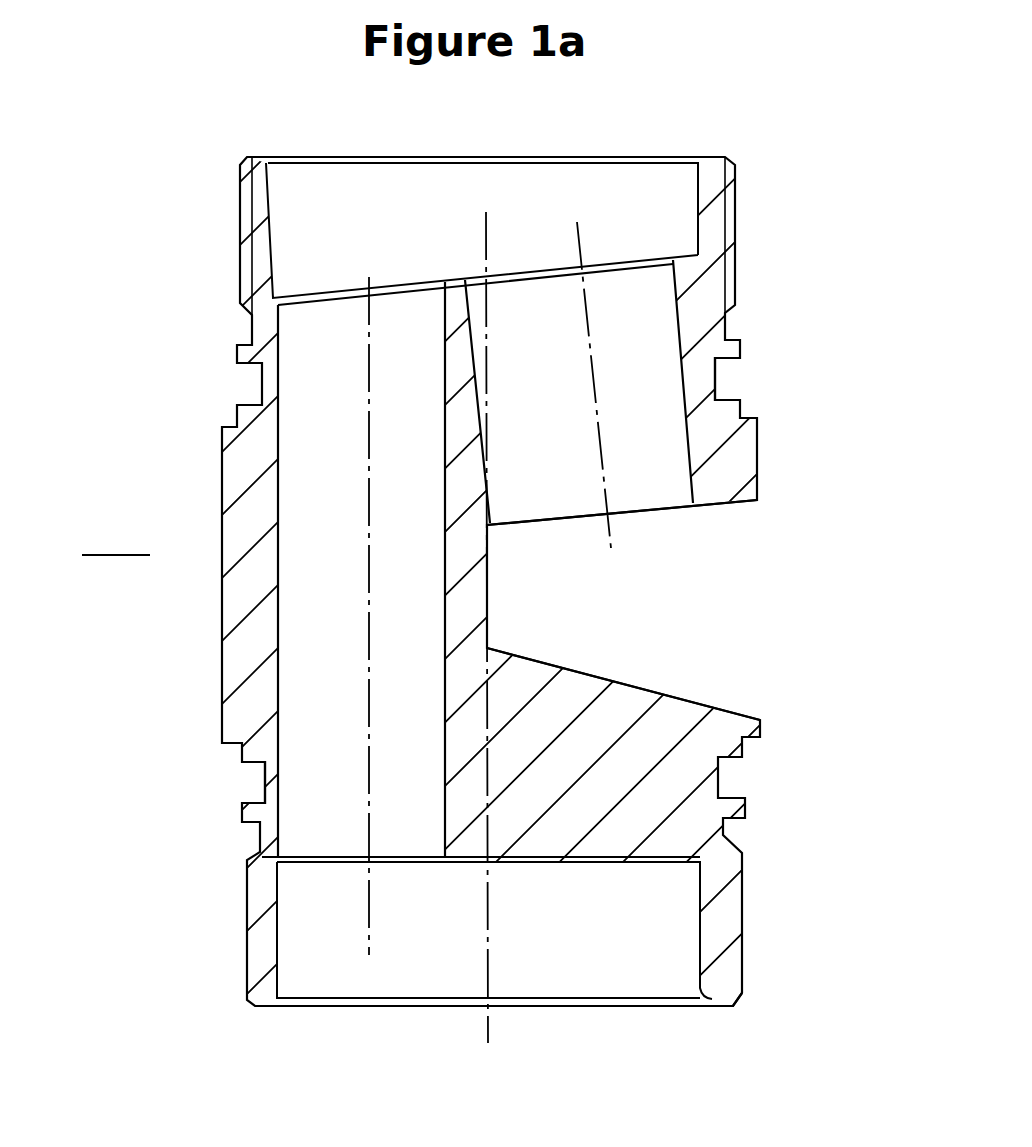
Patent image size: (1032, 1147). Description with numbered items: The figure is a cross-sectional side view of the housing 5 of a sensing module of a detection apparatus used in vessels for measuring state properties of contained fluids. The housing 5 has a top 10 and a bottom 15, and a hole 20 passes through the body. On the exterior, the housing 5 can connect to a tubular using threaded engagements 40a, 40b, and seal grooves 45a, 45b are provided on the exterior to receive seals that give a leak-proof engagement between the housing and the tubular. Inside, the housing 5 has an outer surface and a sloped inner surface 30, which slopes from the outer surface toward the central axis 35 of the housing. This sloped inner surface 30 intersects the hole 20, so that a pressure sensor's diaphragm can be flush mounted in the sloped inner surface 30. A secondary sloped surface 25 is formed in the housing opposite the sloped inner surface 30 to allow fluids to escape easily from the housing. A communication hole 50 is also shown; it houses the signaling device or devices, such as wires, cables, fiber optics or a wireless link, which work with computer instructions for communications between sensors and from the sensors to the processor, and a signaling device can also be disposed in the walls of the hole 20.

The housing 5 is at (140, 562).
The top 10 is at (290, 157).
The bottom 15 is at (712, 1003).
The hole 20 is at (618, 313).
The secondary sloped surface 25 is at (627, 683).
The sloped inner surface 30 is at (675, 508).
The central axis 35 is at (492, 943).
The threaded engagement 40a is at (238, 220).
The threaded engagement 40b is at (742, 917).
The seal groove 45a is at (725, 382).
The seal groove 45b is at (262, 782).
The communication hole 50 is at (330, 507).